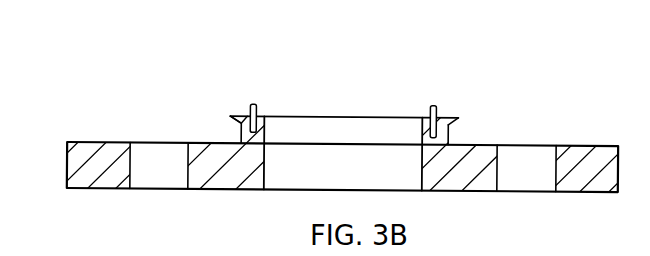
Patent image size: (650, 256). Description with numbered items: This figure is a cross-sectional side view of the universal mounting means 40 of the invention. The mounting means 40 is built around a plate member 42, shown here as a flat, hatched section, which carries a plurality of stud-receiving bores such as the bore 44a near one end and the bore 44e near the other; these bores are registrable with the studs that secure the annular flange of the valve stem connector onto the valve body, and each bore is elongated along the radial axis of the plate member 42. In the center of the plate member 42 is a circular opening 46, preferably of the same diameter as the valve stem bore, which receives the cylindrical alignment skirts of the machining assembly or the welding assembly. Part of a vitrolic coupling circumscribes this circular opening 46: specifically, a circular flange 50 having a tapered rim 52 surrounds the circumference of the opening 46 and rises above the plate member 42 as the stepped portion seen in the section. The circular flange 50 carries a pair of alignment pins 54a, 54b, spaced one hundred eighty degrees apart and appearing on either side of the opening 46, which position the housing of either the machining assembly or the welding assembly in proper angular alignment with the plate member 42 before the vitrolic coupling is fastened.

The universal mounting means 40 is at (102, 89).
The plate member 42 is at (85, 142).
The stud-receiving bore 44a is at (133, 175).
The stud-receiving bore 44e is at (554, 175).
The circular opening 46 is at (266, 151).
The circular flange 50 is at (242, 114).
The tapered rim 52 is at (228, 121).
The alignment pin 54a is at (256, 104).
The alignment pin 54b is at (433, 104).